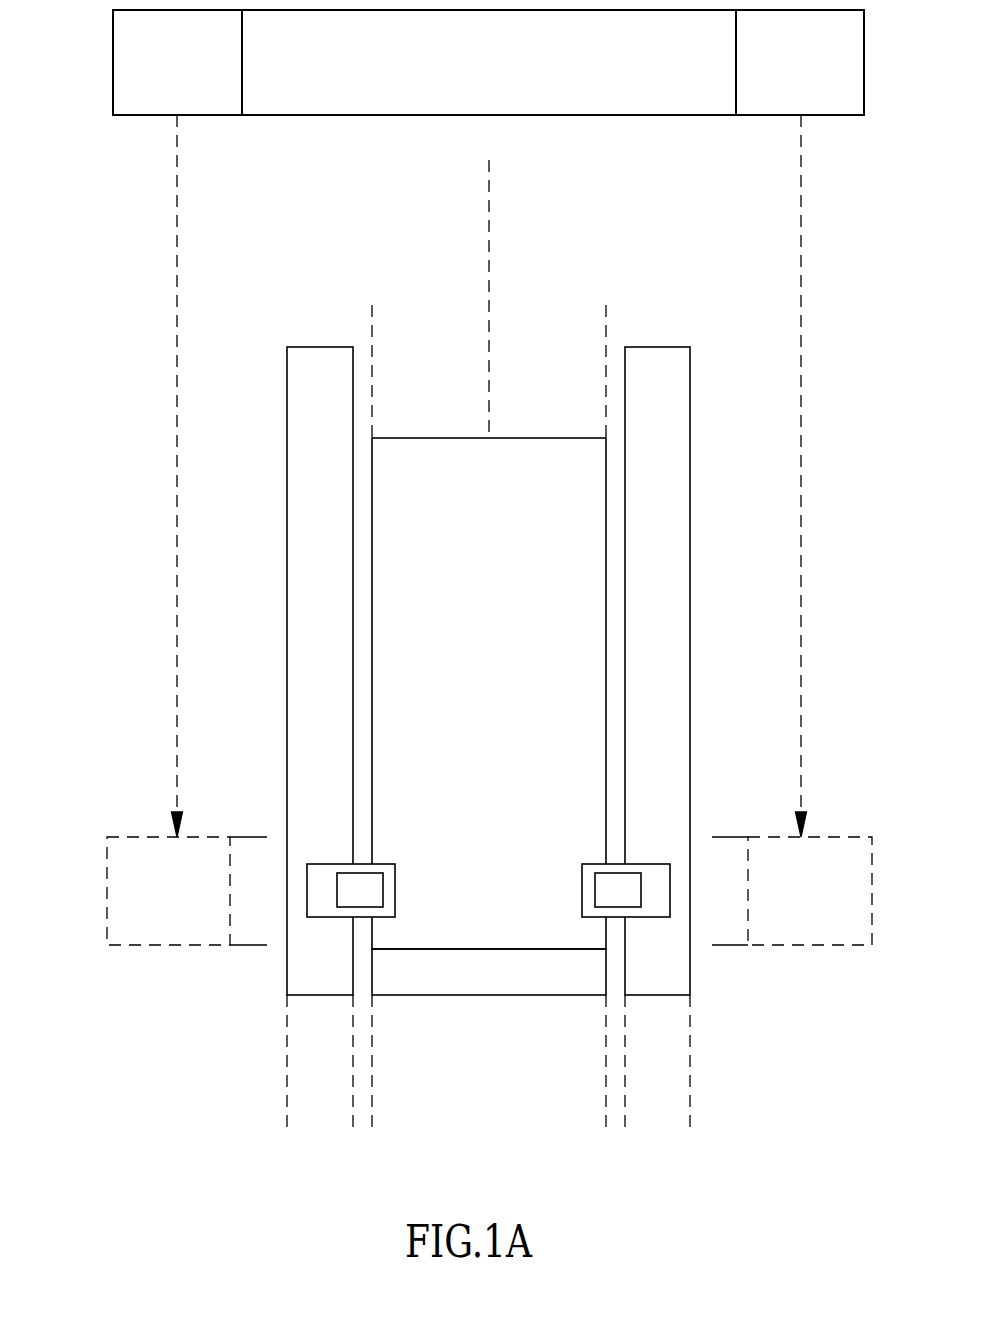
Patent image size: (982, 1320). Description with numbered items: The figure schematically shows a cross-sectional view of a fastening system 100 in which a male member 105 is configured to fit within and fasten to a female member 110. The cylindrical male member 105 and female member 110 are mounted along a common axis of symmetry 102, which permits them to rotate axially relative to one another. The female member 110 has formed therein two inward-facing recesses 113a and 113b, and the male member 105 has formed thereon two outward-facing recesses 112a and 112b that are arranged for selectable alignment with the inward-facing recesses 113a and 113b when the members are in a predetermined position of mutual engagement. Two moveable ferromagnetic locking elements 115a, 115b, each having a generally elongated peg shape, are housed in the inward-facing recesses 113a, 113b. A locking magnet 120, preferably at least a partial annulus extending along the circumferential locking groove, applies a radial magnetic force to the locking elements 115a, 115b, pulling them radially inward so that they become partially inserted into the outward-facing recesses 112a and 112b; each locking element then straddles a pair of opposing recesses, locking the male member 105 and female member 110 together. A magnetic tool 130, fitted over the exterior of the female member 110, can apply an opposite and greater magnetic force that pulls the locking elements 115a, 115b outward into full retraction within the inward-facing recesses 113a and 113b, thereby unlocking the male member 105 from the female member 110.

The fastening system 100 is at (140, 268).
The axis of symmetry 102 is at (489, 217).
The male member 105 is at (507, 631).
The female member 110 is at (287, 436).
The outward-facing recess 112a is at (396, 880).
The outward-facing recess 112b is at (582, 897).
The inward-facing recess 113a is at (330, 917).
The inward-facing recess 113b is at (648, 917).
The ferromagnetic locking element 115a is at (347, 873).
The ferromagnetic locking element 115b is at (642, 885).
The locking magnet 120 is at (547, 995).
The magnetic tool 130 is at (507, 81).